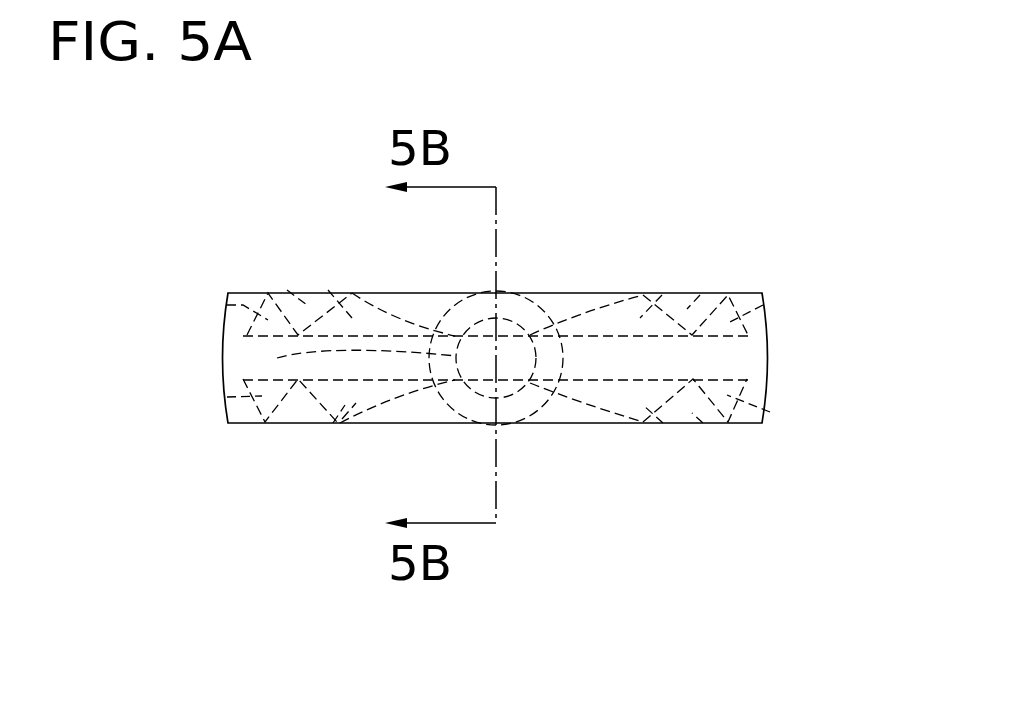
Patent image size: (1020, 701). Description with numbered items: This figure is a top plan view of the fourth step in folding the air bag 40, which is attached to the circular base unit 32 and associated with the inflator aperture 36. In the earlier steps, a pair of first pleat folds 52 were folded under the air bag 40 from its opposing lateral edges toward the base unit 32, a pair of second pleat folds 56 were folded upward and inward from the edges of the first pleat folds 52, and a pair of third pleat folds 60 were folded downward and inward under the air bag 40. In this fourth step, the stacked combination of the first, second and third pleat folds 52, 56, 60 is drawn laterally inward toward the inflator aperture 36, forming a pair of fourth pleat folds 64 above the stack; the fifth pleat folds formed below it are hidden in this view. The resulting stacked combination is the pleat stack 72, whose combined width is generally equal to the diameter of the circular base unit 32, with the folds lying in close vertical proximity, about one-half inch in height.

The base unit 32 is at (505, 289).
The inflator aperture 36 is at (277, 358).
The air bag 40 is at (752, 362).
The first pleat folds 52 is at (568, 302).
The second pleat folds 56 is at (328, 290).
The third pleat folds 60 is at (287, 290).
The fourth pleat folds 64 is at (227, 305).
The pleat stack 72 is at (186, 345).